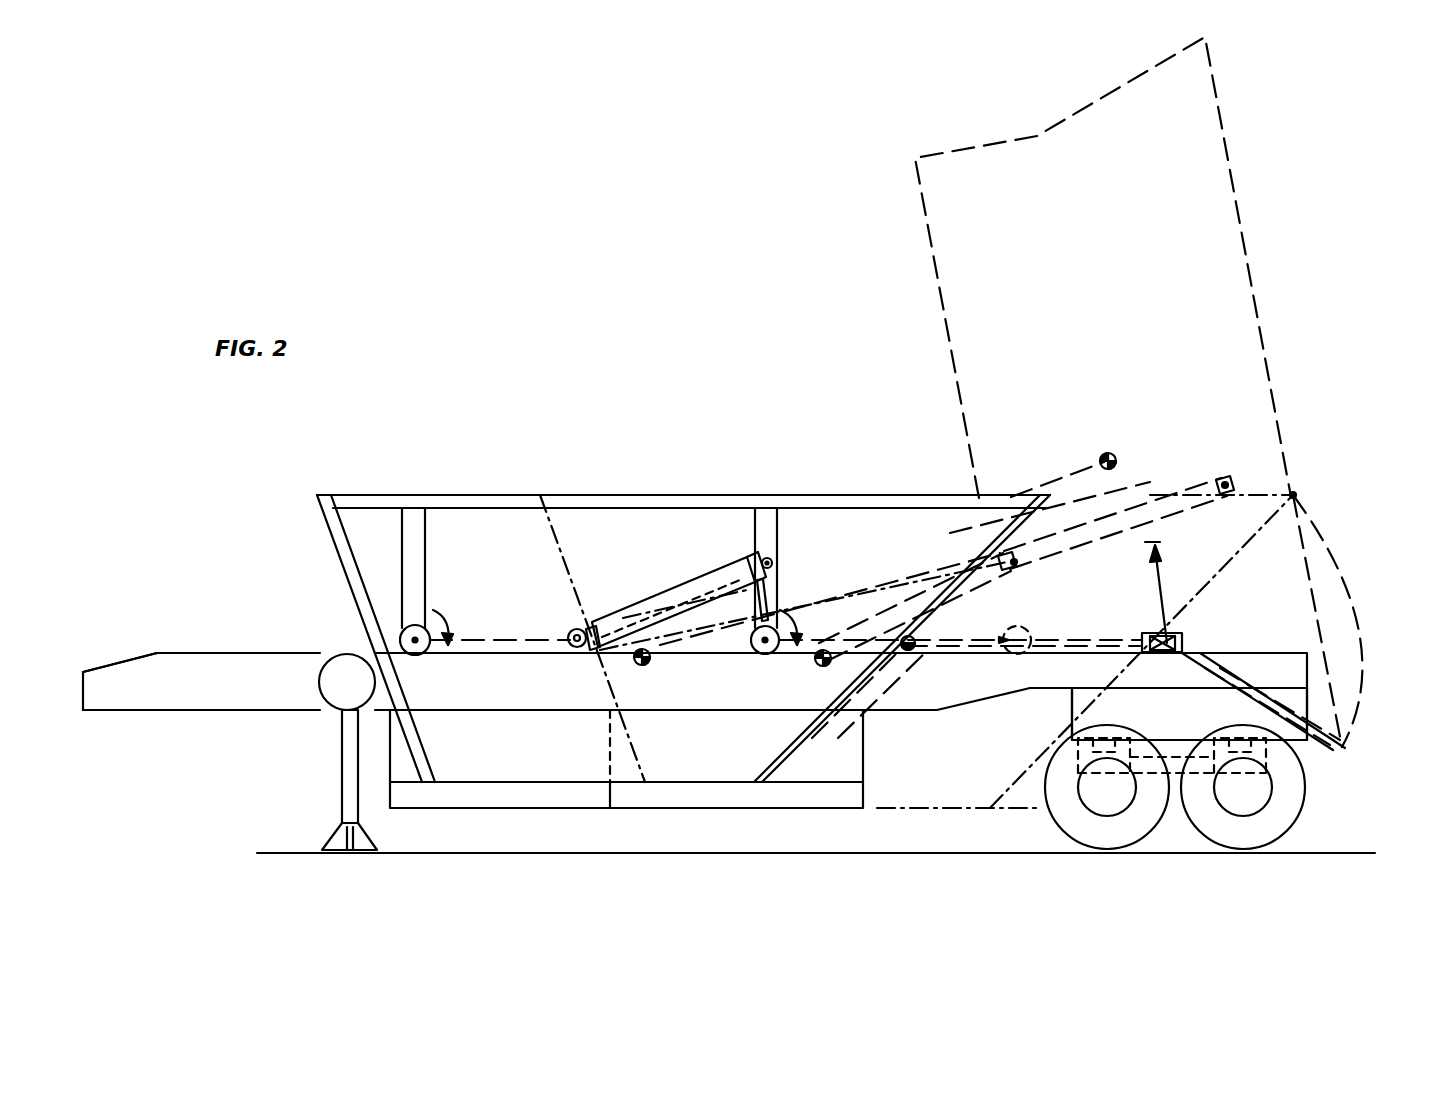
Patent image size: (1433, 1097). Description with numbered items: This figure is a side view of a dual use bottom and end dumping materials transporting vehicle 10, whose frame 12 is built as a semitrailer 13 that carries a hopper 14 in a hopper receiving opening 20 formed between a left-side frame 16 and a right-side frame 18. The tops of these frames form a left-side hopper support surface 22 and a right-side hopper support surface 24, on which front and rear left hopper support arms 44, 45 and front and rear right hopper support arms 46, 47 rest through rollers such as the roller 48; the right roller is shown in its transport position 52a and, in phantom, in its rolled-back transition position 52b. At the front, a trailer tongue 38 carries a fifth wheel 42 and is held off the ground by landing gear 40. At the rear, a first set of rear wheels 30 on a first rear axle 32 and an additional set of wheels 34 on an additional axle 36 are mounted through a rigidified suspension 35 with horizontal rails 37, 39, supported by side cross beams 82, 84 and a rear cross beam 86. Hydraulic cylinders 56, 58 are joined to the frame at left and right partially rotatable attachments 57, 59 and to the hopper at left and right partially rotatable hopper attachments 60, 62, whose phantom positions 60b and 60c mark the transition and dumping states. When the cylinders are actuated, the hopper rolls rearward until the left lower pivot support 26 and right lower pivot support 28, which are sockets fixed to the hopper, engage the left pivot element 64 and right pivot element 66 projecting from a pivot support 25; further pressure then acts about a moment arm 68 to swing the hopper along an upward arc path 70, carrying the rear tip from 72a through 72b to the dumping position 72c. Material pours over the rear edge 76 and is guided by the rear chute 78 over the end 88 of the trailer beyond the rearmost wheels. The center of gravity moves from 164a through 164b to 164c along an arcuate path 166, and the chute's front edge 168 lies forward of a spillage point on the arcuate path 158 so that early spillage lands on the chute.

The materials transporting vehicle 10 is at (428, 452).
The frame 12 is at (228, 653).
The semitrailer 13 is at (177, 698).
The hopper 14 is at (330, 530).
The left-side frame 16 is at (318, 657).
The right-side frame 18 is at (362, 647).
The hopper receiving opening 20 is at (525, 487).
The left-side hopper support surface 22 is at (786, 625).
The right-side hopper support surface 24 is at (473, 652).
The pivot support 25 is at (1217, 597).
The left lower pivot support 26 is at (952, 664).
The right lower pivot support 28 is at (910, 648).
The first set of rear wheels 30 is at (1053, 842).
The first rear axle 32 is at (1098, 808).
The additional set of wheels 34 is at (1207, 837).
The rigidified suspension 35 is at (1185, 790).
The additional axle 36 is at (1258, 798).
The horizontal rail 37 is at (1177, 740).
The trailer tongue 38 is at (95, 672).
The horizontal rail 39 is at (1178, 738).
The landing gear 40 is at (342, 752).
The fifth wheel 42 is at (100, 711).
The front left hopper support arm 44 is at (465, 568).
The front right hopper support arm 46 is at (425, 533).
The rear left hopper support arm 45 is at (722, 542).
The rear right hopper support arm 47 is at (752, 525).
The roller 48 is at (413, 627).
The roller in transport position 52a is at (757, 643).
The roller in transition position 52b is at (1030, 655).
The hydraulic cylinder 56 is at (679, 597).
The hydraulic cylinder 58 is at (713, 575).
The left partially rotatable attachment 57 is at (546, 662).
The right partially rotatable attachment 59 is at (582, 653).
The left partially rotatable hopper attachment 60 is at (810, 571).
The right partially rotatable hopper attachment 62 is at (772, 557).
The hopper attachment in transition position 60b is at (1020, 571).
The hopper attachment in dumping position 60c is at (1226, 482).
The left pivot element 64 is at (1217, 597).
The right pivot element 66 is at (1217, 597).
The moment arm 68 is at (1158, 592).
The upward arc path 70 is at (1152, 483).
The rear tip in transport position 72a is at (1043, 496).
The rear tip in transition position 72b is at (1296, 496).
The rear tip in dumping position 72c is at (1342, 740).
The rear edge 76 is at (1300, 742).
The rear chute 78 is at (1300, 742).
The cross beam 82 is at (1112, 720).
The cross beam 84 is at (1240, 720).
The cross beam 86 is at (1300, 742).
The end of trailer 88 is at (1278, 713).
The arcuate path 158 is at (1345, 580).
The center of gravity 164a is at (647, 665).
The center of gravity in transition position 164b is at (825, 660).
The center of gravity in dumping position 164c is at (1108, 455).
The arcuate path 166 is at (933, 497).
The front edge 168 is at (1180, 637).